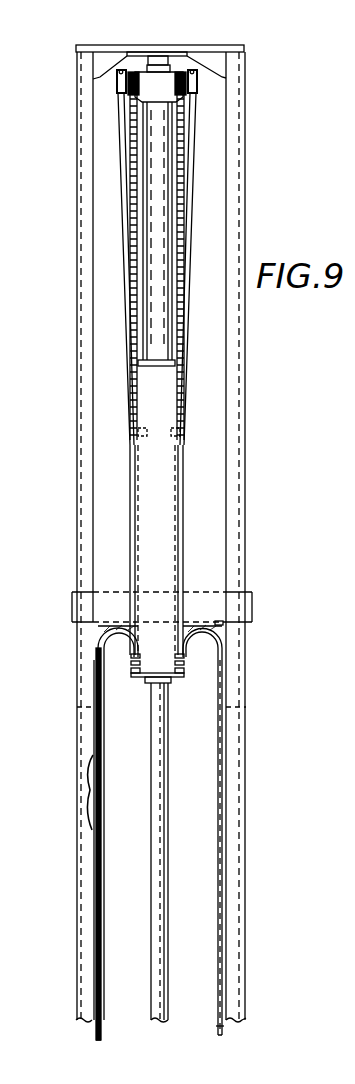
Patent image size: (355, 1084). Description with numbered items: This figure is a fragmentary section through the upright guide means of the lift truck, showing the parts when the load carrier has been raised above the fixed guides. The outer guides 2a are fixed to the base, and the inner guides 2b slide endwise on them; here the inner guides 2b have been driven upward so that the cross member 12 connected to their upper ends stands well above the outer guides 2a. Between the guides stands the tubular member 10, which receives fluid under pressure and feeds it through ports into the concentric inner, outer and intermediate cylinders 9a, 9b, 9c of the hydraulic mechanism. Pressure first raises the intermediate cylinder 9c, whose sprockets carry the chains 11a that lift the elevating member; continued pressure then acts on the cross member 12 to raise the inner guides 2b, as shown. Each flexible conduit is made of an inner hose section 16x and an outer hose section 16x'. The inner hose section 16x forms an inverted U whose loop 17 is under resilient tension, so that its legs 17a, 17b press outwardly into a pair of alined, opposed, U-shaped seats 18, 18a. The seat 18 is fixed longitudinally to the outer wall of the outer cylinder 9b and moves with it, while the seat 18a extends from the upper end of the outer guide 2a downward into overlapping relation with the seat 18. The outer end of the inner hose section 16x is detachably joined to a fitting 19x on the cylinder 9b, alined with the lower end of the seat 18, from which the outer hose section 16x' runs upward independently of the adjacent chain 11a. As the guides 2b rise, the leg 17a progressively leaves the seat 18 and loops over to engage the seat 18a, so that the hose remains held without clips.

The outer guides 2a is at (233, 818).
The inner guides 2b is at (232, 226).
The inner cylinder 9a is at (110, 16).
The outer cylinder 9b is at (166, 421).
The intermediate cylinder 9c is at (160, 293).
The tubular member 10 is at (152, 893).
The chains 11a is at (183, 155).
The cross member 12 is at (201, 49).
The inner hose section 16x is at (200, 1038).
The outer hose section 16x' is at (163, 257).
The loop 17 is at (130, 627).
The hose leg 17a is at (127, 655).
The hose leg 17b is at (103, 802).
The seat 18 is at (176, 478).
The seat 18a is at (103, 848).
The fitting 19x is at (173, 684).